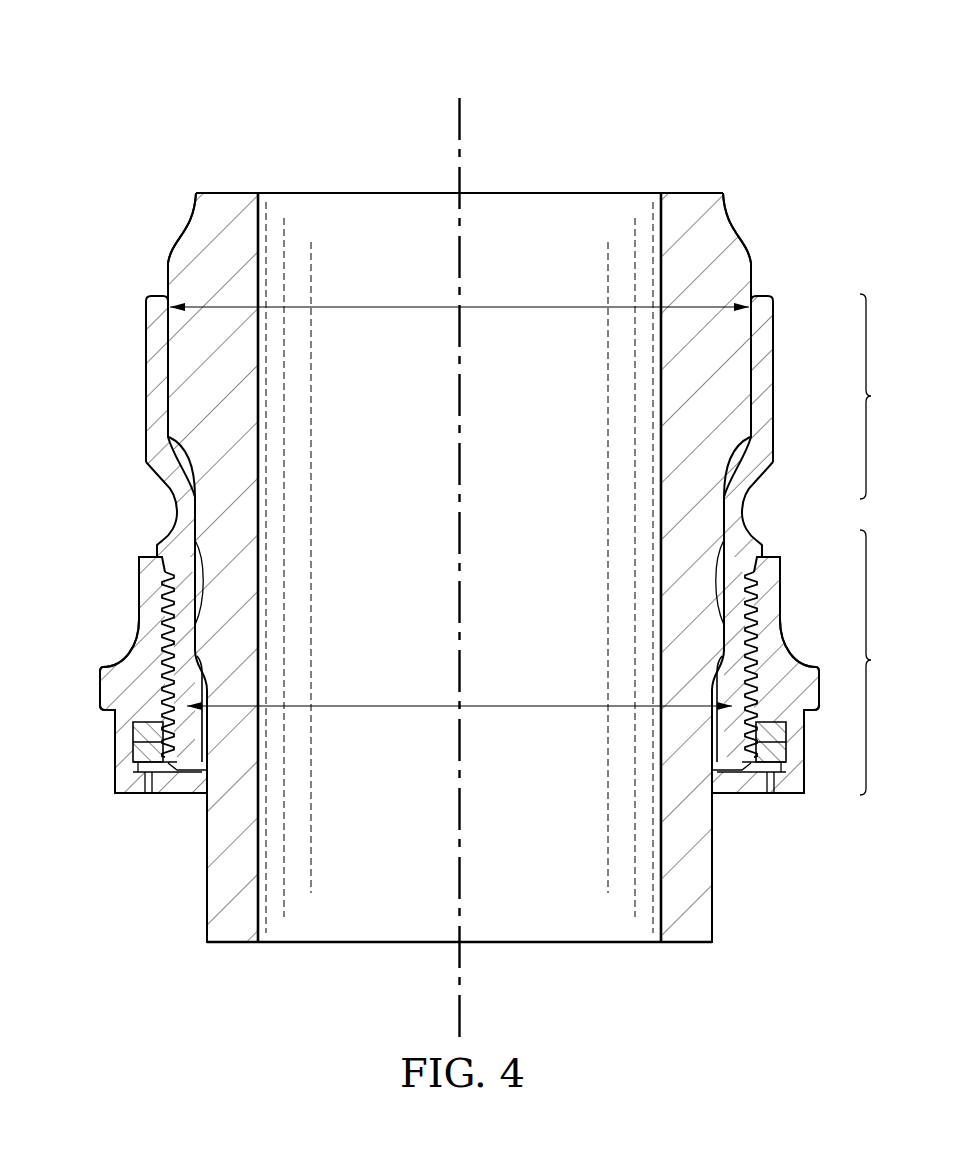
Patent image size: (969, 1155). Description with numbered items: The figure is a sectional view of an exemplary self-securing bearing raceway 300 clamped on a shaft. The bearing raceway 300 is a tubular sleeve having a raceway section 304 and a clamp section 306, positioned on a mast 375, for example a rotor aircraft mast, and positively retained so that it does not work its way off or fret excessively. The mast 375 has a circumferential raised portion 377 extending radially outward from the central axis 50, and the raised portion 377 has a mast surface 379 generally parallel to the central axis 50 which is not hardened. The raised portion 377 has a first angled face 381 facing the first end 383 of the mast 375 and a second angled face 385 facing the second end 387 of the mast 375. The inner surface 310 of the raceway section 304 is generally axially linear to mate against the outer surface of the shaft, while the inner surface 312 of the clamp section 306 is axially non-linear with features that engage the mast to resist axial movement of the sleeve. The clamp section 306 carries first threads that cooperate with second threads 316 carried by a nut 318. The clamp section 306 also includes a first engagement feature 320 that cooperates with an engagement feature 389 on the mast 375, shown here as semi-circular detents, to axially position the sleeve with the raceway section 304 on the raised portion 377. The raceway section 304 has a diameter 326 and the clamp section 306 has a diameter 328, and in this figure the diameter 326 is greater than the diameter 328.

The self-securing bearing raceway 300 is at (250, 80).
The central axis 50 is at (459, 112).
The raceway section 304 is at (891, 396).
The clamp section 306 is at (891, 662).
The inner surface 310 is at (172, 392).
The inner surface 312 is at (708, 687).
The second threads 316 is at (166, 654).
The nut 318 is at (106, 690).
The first engagement feature 320 is at (723, 633).
The diameter 326 is at (393, 306).
The diameter 328 is at (393, 705).
The mast 375 is at (708, 888).
The raised portion 377 is at (736, 350).
The mast surface 379 is at (752, 290).
The first angled face 381 is at (170, 243).
The first end 383 is at (195, 205).
The second angled face 385 is at (176, 470).
The second end 387 is at (206, 930).
The engagement feature 389 is at (166, 588).